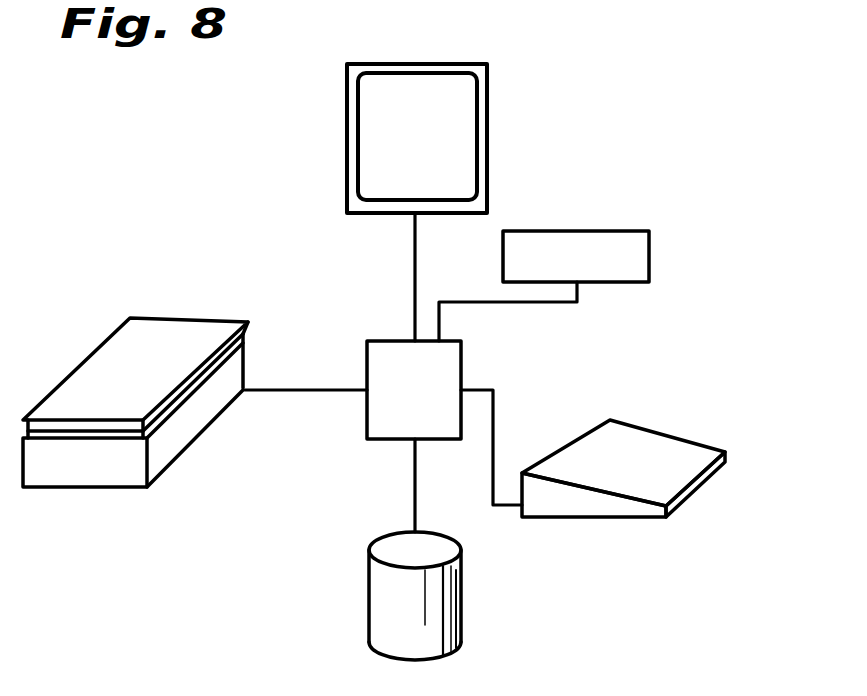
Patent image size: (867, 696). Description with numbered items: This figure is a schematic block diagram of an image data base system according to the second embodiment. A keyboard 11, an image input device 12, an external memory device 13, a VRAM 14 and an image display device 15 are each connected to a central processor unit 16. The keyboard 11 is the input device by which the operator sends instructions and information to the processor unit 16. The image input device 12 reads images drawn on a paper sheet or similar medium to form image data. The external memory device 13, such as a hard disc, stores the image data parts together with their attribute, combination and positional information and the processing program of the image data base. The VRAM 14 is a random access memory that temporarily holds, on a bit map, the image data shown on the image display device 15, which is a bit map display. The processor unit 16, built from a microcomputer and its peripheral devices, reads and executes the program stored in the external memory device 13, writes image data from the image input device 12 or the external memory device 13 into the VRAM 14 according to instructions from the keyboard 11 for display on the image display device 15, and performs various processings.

The keyboard 11 is at (658, 442).
The image input device 12 is at (162, 337).
The external memory device 13 is at (443, 615).
The VRAM 14 is at (637, 262).
The image display device 15 is at (482, 137).
The processor unit 16 is at (380, 422).